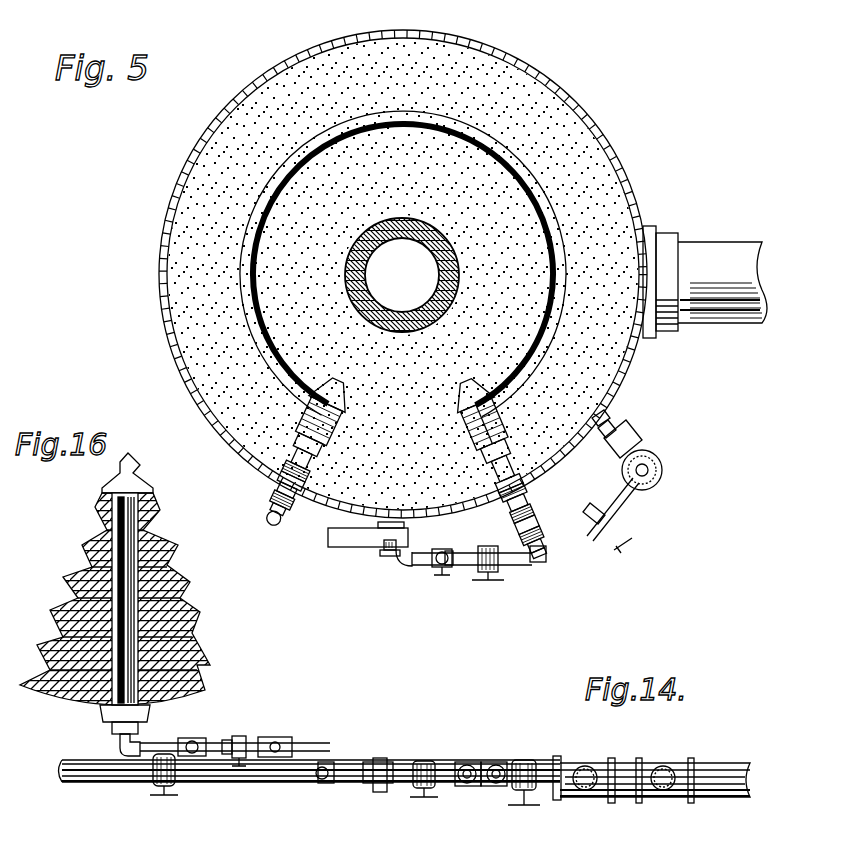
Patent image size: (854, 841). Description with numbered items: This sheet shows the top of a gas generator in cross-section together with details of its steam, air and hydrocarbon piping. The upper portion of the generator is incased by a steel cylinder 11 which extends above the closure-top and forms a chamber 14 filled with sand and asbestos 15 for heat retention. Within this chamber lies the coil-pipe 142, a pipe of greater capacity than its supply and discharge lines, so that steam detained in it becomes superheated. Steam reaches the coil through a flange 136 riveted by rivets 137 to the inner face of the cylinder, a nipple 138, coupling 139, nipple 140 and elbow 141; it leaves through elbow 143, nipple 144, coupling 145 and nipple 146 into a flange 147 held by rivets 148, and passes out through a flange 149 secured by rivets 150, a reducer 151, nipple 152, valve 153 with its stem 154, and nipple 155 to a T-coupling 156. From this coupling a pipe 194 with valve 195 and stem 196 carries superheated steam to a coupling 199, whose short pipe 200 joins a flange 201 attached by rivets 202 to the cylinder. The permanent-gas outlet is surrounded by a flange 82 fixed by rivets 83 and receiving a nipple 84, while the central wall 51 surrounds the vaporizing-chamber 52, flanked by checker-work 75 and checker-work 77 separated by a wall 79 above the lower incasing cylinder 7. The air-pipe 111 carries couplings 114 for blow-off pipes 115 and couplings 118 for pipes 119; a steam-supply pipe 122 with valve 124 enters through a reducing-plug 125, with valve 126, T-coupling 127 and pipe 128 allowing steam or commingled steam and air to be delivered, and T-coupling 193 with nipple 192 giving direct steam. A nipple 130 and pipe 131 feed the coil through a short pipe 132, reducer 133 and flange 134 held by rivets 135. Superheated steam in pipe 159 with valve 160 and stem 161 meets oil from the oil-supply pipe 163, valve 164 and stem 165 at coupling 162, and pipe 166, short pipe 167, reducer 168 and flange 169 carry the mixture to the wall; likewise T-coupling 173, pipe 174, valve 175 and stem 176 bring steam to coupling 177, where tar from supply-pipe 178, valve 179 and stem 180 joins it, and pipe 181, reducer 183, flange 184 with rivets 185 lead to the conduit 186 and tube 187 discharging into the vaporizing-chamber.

In FIG. 5, the cylinder 11 is at (605, 160).
In FIG. 5, the chamber 14 is at (403, 274).
In FIG. 5, the sand and asbestos 15 is at (556, 206).
In FIG. 5, the wall of the initial fixing-chamber 51 is at (420, 244).
In FIG. 16, the wall of the initial fixing-chamber 51 is at (142, 500).
In FIG. 5, the vaporizing-chamber 52 is at (402, 275).
In FIG. 16, the vaporizing-chamber 52 is at (136, 468).
In FIG. 5, the flange 82 is at (667, 282).
In FIG. 5, the rivets 83 is at (650, 232).
In FIG. 5, the nipple 84 is at (722, 282).
In FIG. 5, the short pipe 132 is at (256, 512).
In FIG. 5, the reducer 133 is at (278, 509).
In FIG. 5, the flange 134 is at (291, 481).
In FIG. 5, the rivets 135 is at (295, 471).
In FIG. 5, the flange 136 is at (287, 490).
In FIG. 5, the rivets 137 is at (282, 500).
In FIG. 5, the nipple 138 is at (301, 458).
In FIG. 5, the coupling 139 is at (307, 445).
In FIG. 5, the nipple 140 is at (319, 421).
In FIG. 5, the elbow 141 is at (348, 399).
In FIG. 5, the coil-pipe 142 is at (262, 378).
In FIG. 5, the elbow 143 is at (470, 393).
In FIG. 5, the nipple 144 is at (484, 424).
In FIG. 5, the coupling 145 is at (484, 424).
In FIG. 5, the nipple 146 is at (495, 451).
In FIG. 5, the flange 147 is at (502, 468).
In FIG. 5, the rivets 148 is at (509, 483).
In FIG. 5, the flange 149 is at (517, 503).
In FIG. 5, the rivets 150 is at (513, 492).
In FIG. 5, the reducer 151 is at (522, 514).
In FIG. 5, the nipple 152 is at (535, 545).
In FIG. 5, the valve 153 is at (548, 538).
In FIG. 5, the valve stem 154 is at (526, 525).
In FIG. 5, the nipple 155 is at (531, 536).
In FIG. 5, the T-coupling 156 is at (547, 558).
In FIG. 14, the T-coupling 156 is at (285, 770).
In FIG. 5, the pipe 159 is at (516, 565).
In FIG. 5, the valve 160 is at (482, 578).
In FIG. 5, the valve stem 161 is at (491, 591).
In FIG. 5, the coupling 162 is at (444, 577).
In FIG. 5, the oil-supply pipe 163 is at (437, 568).
In FIG. 5, the valve 164 is at (452, 547).
In FIG. 5, the valve stem 165 is at (440, 570).
In FIG. 5, the pipe 166 is at (406, 568).
In FIG. 5, the short pipe 167 is at (388, 548).
In FIG. 5, the reducer 168 is at (385, 556).
In FIG. 5, the flange 169 is at (384, 545).
In FIG. 5, the pipe 194 is at (608, 500).
In FIG. 5, the valve 195 is at (598, 501).
In FIG. 5, the valve stem 196 is at (622, 547).
In FIG. 5, the coupling 199 is at (646, 452).
In FIG. 5, the short pipe 200 is at (624, 432).
In FIG. 5, the flange 201 is at (608, 424).
In FIG. 5, the rivets 202 is at (602, 414).
In FIG. 16, the incasing cylinder 7 is at (195, 640).
In FIG. 16, the checker-work 77 is at (155, 526).
In FIG. 16, the wall 79 is at (165, 556).
In FIG. 16, the checker-work 75 is at (178, 592).
In FIG. 16, the valve 179 is at (150, 748).
In FIG. 16, the pipe 181 is at (144, 739).
In FIG. 16, the reducer 183 is at (112, 728).
In FIG. 16, the flange 184 is at (150, 712).
In FIG. 16, the rivets 185 is at (160, 728).
In FIG. 16, the conduit 186 is at (134, 538).
In FIG. 16, the tube 187 is at (190, 604).
In FIG. 14, the air-pipe 111 is at (728, 772).
In FIG. 14, the couplings 114 is at (656, 766).
In FIG. 14, the blow-off pipe 115 is at (690, 758).
In FIG. 14, the couplings 118 is at (612, 758).
In FIG. 14, the pipe 119 is at (585, 766).
In FIG. 14, the steam-supply pipe 122 is at (262, 783).
In FIG. 14, the valve 124 is at (424, 760).
In FIG. 14, the reducing-plug 125 is at (556, 800).
In FIG. 14, the valve 126 is at (528, 760).
In FIG. 14, the T-coupling 127 is at (496, 759).
In FIG. 14, the pipe 128 is at (500, 762).
In FIG. 14, the nipple 130 is at (326, 784).
In FIG. 14, the pipe 131 is at (332, 759).
In FIG. 14, the T-coupling 173 is at (330, 745).
In FIG. 14, the pipe 174 is at (276, 738).
In FIG. 14, the valve 175 is at (300, 740).
In FIG. 14, the valve-stem 176 is at (238, 768).
In FIG. 14, the coupling 177 is at (219, 753).
In FIG. 14, the supply-pipe 178 is at (200, 740).
In FIG. 14, the valve-stem 180 is at (196, 792).
In FIG. 14, the nipple 192 is at (466, 761).
In FIG. 14, the T-coupling 193 is at (470, 788).